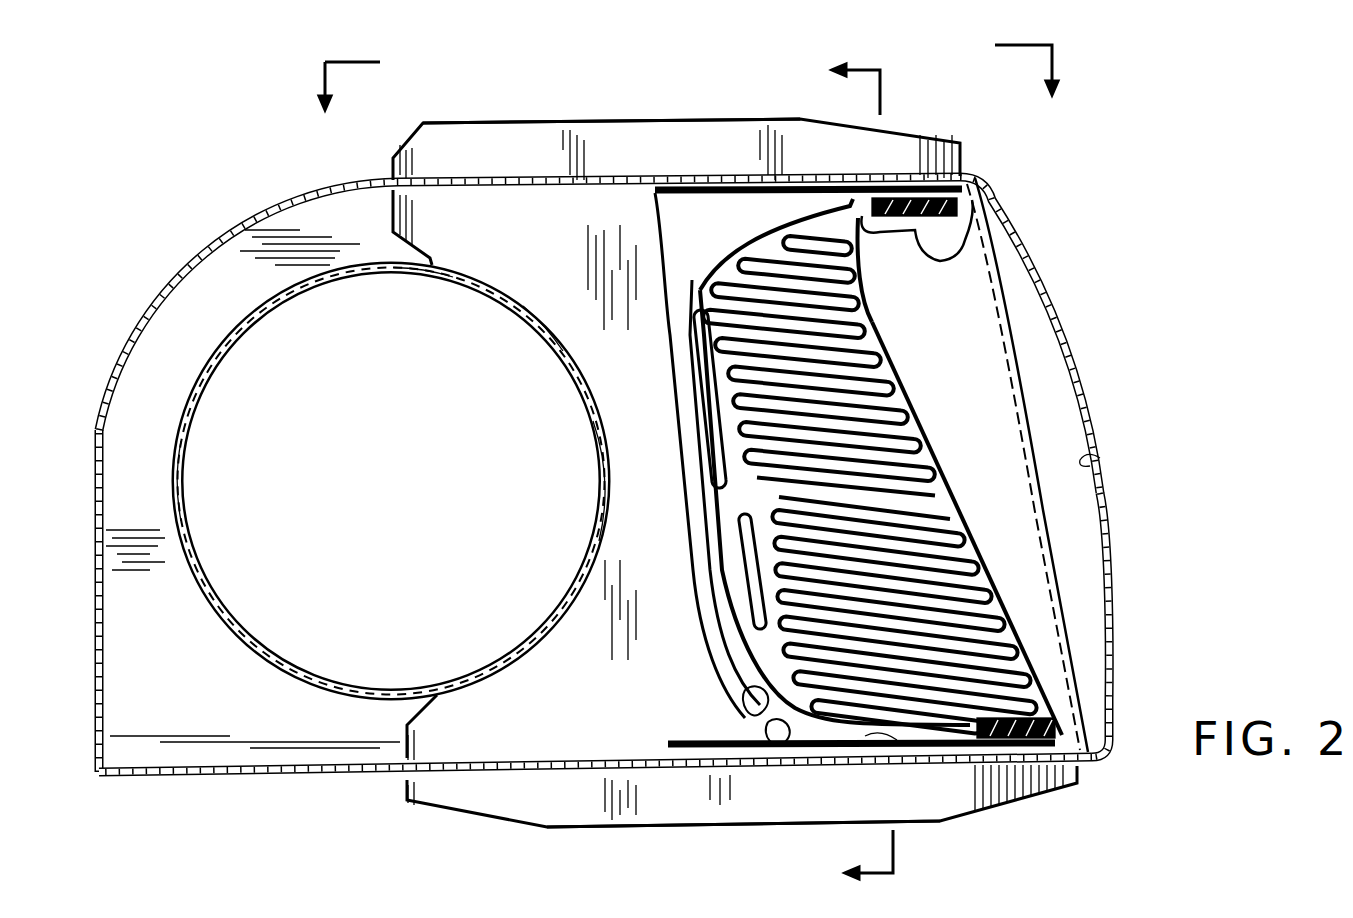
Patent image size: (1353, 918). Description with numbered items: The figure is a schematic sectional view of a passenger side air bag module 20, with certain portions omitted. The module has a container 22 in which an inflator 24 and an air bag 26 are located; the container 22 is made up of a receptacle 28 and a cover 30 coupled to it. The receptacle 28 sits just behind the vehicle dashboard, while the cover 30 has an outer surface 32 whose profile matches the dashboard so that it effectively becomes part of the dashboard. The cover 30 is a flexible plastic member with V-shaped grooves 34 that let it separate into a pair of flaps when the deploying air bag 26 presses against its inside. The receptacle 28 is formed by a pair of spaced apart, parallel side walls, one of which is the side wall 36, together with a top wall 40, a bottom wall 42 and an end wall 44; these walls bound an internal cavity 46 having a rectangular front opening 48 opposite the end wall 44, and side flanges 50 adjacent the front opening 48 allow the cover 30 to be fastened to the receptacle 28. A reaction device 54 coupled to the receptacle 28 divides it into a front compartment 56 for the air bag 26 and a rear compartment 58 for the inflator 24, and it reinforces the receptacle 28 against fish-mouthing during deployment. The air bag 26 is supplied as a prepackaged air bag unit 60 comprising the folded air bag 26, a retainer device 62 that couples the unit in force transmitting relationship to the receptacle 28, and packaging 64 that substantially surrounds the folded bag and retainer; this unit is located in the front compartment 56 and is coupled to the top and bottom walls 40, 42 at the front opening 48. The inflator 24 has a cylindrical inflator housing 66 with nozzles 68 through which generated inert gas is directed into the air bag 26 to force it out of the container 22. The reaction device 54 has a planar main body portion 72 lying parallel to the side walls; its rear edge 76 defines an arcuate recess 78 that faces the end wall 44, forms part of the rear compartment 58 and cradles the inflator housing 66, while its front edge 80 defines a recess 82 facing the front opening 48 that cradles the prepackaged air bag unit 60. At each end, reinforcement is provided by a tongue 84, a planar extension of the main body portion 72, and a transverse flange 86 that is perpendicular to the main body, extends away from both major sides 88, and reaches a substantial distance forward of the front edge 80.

The passenger side air bag module 20 is at (1148, 102).
The container 22 is at (622, 498).
The inflator 24 is at (216, 618).
The air bag 26 is at (867, 320).
The receptacle 28 is at (268, 205).
The cover 30 is at (1096, 467).
The outer surface 32 is at (1058, 303).
The V-shaped grooves 34 is at (1100, 458).
The side wall 36 is at (215, 296).
The top wall 40 is at (610, 182).
The bottom wall 42 is at (250, 777).
The end wall 44 is at (99, 548).
The internal cavity 46 is at (995, 528).
The front opening 48 is at (1030, 355).
The side flanges 50 is at (1060, 598).
The reaction device 54 is at (508, 716).
The front compartment 56 is at (697, 244).
The rear compartment 58 is at (175, 340).
The prepackaged air bag unit 60 is at (937, 460).
The retainer device 62 is at (922, 236).
The packaging 64 is at (912, 415).
The inflator housing 66 is at (174, 465).
The nozzles 68 is at (594, 530).
The planar main body portion 72 is at (465, 240).
The rear edge 76 is at (421, 268).
The arcuate recess 78 is at (541, 334).
The front edge 80 is at (768, 770).
The recess 82 is at (742, 765).
The tongue 84 is at (503, 146).
The transverse flange 86 is at (712, 182).
The major sides 88 is at (544, 250).